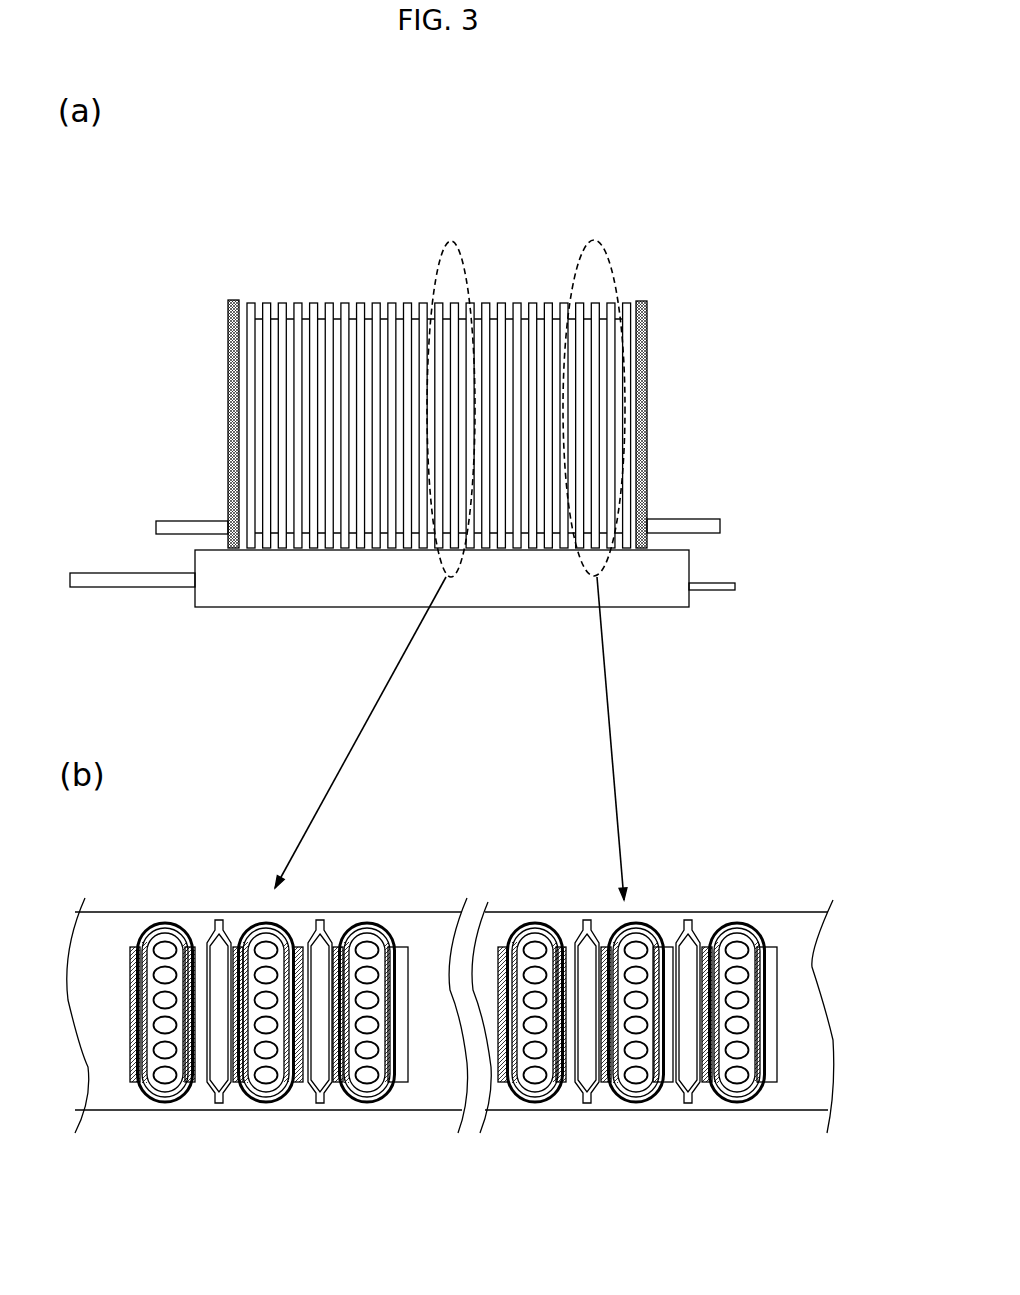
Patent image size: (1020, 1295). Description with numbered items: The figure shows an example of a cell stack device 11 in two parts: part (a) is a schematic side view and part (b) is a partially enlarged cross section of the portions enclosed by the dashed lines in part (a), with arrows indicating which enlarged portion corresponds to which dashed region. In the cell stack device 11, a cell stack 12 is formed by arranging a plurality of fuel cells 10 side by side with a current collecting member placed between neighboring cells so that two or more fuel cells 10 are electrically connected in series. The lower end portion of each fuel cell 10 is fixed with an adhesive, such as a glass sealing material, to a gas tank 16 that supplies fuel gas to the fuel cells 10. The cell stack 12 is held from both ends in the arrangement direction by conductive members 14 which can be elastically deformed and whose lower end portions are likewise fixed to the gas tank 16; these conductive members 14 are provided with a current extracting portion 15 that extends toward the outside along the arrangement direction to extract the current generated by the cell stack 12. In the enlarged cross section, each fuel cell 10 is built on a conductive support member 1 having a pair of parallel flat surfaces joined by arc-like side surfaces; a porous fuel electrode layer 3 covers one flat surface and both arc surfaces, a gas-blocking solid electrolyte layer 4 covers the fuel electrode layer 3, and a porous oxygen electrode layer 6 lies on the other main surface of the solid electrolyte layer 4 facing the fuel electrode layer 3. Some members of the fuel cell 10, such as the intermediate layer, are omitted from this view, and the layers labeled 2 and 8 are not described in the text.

The conductive support member 1 is at (717, 1102).
The heat insulating layer 2 is at (712, 1090).
The fuel electrode layer 3 is at (752, 1098).
The solid electrolyte layer 4 is at (738, 1100).
The oxygen electrode layer 6 is at (704, 947).
The pressing plate 8 is at (764, 953).
The fuel cell 10 is at (512, 307).
The cell stack device 11 is at (203, 167).
The cell stack 12 is at (227, 285).
The conductive member 14 is at (237, 432).
The current extracting portion 15 is at (687, 527).
The gas tank 16 is at (735, 587).